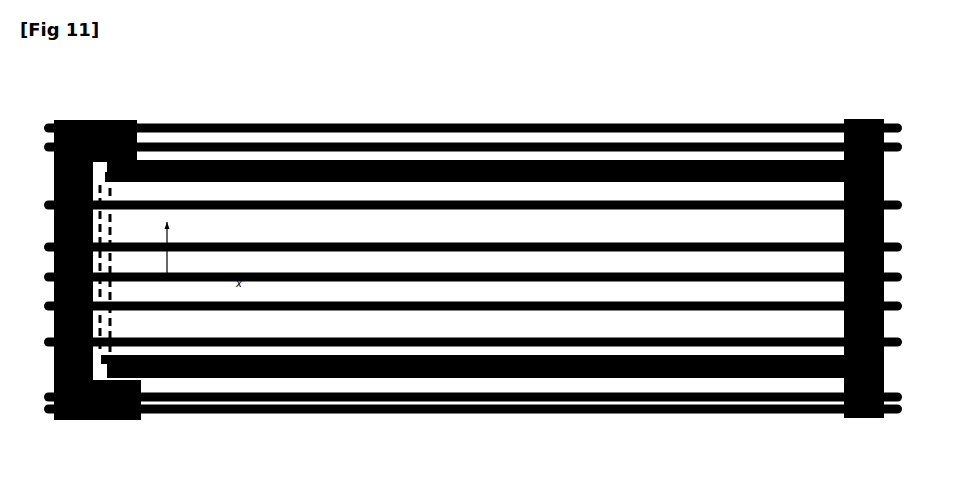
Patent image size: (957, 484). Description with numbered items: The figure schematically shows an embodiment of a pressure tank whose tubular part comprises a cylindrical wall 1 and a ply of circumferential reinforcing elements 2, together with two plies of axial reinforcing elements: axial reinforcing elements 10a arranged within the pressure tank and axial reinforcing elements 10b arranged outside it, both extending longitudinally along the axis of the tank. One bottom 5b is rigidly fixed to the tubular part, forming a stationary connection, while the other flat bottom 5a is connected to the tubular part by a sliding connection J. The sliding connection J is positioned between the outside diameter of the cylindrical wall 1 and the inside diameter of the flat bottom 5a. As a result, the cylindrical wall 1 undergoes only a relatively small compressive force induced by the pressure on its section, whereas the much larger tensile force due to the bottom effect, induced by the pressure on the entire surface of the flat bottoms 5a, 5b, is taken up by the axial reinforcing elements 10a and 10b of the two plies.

The cylindrical wall 1 is at (655, 171).
The ply of circumferential reinforcing elements 2 is at (284, 160).
The bottom connected by a sliding connection 5a is at (75, 385).
The bottom rigidly fixed to the tubular part 5b is at (852, 420).
The sliding connection J is at (130, 372).
The axial reinforcing elements 10a is at (447, 338).
The axial reinforcing elements 10b is at (582, 398).